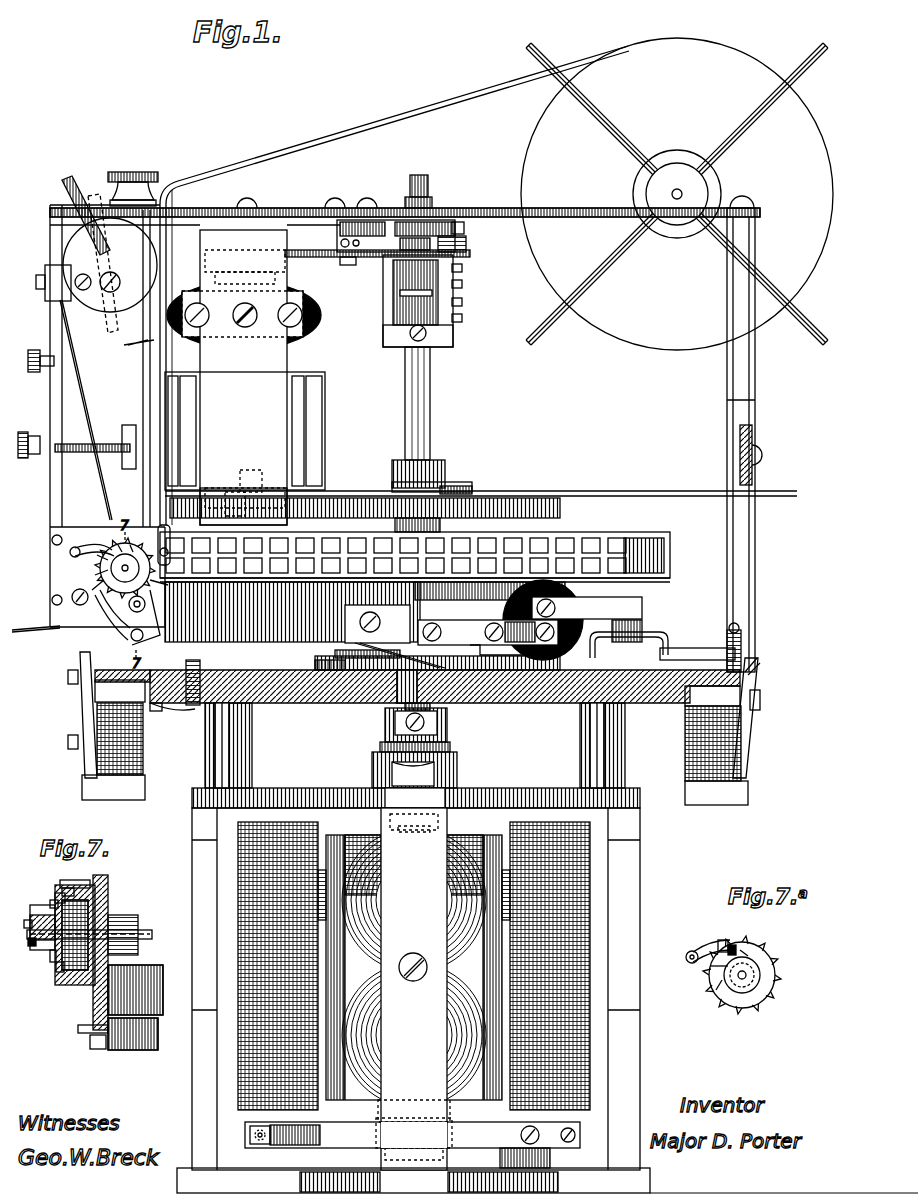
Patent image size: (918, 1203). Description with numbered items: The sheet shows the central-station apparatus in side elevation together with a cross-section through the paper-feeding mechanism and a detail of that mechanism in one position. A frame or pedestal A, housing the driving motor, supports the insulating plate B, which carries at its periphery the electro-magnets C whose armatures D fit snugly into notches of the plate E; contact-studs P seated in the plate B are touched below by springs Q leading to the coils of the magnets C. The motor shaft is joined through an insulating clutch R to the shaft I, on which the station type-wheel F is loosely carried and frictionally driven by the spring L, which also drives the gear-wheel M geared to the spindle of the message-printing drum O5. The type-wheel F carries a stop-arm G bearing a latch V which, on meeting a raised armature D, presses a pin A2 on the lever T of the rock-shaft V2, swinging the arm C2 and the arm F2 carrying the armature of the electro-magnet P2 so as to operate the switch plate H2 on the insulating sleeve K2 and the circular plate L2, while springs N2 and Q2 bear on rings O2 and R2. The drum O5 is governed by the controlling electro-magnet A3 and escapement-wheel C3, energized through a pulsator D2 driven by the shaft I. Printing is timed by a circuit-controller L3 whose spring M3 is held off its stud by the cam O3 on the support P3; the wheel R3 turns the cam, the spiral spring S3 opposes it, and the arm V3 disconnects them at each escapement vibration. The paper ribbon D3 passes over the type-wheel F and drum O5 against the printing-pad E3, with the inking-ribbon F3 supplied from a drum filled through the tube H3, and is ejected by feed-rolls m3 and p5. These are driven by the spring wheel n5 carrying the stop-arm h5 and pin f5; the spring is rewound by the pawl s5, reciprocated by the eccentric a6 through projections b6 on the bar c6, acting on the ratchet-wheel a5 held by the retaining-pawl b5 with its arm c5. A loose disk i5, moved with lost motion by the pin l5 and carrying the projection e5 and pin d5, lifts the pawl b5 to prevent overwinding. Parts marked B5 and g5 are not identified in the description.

In FIG. 1, the paper strip or ribbon D3 is at (128, 375).
In FIG. 1, the ink tube H3 is at (78, 190).
In FIG. 1, the escapement-wheel C3 is at (96, 263).
In FIG. 1, the rotary impelling disk or wheel R3 is at (400, 222).
In FIG. 1, the rotary cam O3 is at (462, 225).
In FIG. 1, the circuit-controller spring M3 is at (396, 236).
In FIG. 1, the spiral spring S3 is at (457, 244).
In FIG. 1, the arm V3 is at (296, 256).
In FIG. 1, the circuit-controller L3 is at (390, 262).
In FIG. 1, the movable support or lever P3 is at (411, 300).
In FIG. 1, the controlling electro-magnet A3 is at (312, 336).
In FIG. 1, the pulsator or pole-changer D2 is at (452, 330).
In FIG. 1, the inking-ribbon F3 is at (98, 435).
In FIG. 1, the printing-pad E3 is at (145, 405).
In FIG. 1, the want or message printing drum O5 is at (320, 435).
In FIG. 1, the shaft I is at (418, 417).
In FIG. 1, the eccentric a6 is at (455, 484).
In FIG. 1, the projections b6 is at (470, 479).
In FIG. 1, the gear-wheel M is at (512, 500).
In FIG. 1, the plate or bar c6 is at (585, 495).
In FIG. 1, the spring L is at (470, 532).
In FIG. 1, the room or station indicating type-wheel F is at (598, 535).
In FIG. 1, the insulating sleeve K2 is at (468, 598).
In FIG. 1, the electro-magnet P2 is at (526, 600).
In FIG. 1, the arm F2 is at (587, 608).
In FIG. 1, the contact-plate H2 is at (488, 632).
In FIG. 1, the spring N2 is at (395, 636).
In FIG. 1, the rock-shaft V2 is at (620, 628).
In FIG. 1, the stop-arm G is at (590, 648).
In FIG. 1, the arm C2 is at (498, 650).
In FIG. 1, the lever T is at (675, 654).
In FIG. 1, the latch or catch V is at (728, 634).
In FIG. 1, the pin A2 is at (755, 662).
In FIG. 1, the circular plate L2 is at (437, 660).
In FIG. 1, the spring Q2 is at (367, 660).
In FIG. 1, the metal ring R2 is at (316, 662).
In FIG. 1, the ring O2 is at (335, 654).
In FIG. 1, the plate or table B is at (522, 703).
In FIG. 1, the contact-points or studs P is at (200, 672).
In FIG. 1, the springs Q is at (176, 709).
In FIG. 1, the plate E is at (712, 696).
In FIG. 1, the armatures D is at (770, 670).
In FIG. 1, the electro-magnets C is at (140, 750).
In FIG. 1, the clutch R is at (458, 762).
In FIG. 1, the plate B5 is at (518, 795).
In FIG. 1, the frame or pedestal A is at (648, 896).
In FIG. 1, the ratchet-wheel a5 is at (125, 591).
In FIG. 7, the ratchet-wheel a5 is at (80, 888).
In FIG. 7A, the ratchet-wheel a5 is at (760, 952).
In FIG. 1, the retaining-pawl b5 is at (90, 548).
In FIG. 7, the retaining-pawl b5 is at (68, 890).
In FIG. 7A, the retaining-pawl b5 is at (703, 950).
In FIG. 1, the arm or projection e5 is at (115, 532).
In FIG. 7, the arm or projection e5 is at (56, 906).
In FIG. 7A, the arm or projection e5 is at (725, 935).
In FIG. 1, the pin d5 is at (137, 532).
In FIG. 7, the pin d5 is at (40, 912).
In FIG. 7A, the pin d5 is at (709, 974).
In FIG. 1, the actuating or winding pawl s5 is at (166, 544).
In FIG. 1, the arm c5 is at (89, 566).
In FIG. 7, the arm c5 is at (58, 896).
In FIG. 7A, the arm c5 is at (736, 944).
In FIG. 1, the pin or projection f5 is at (87, 580).
In FIG. 7, the pin or projection f5 is at (32, 926).
In FIG. 7A, the pin or projection f5 is at (748, 952).
In FIG. 1, the loose disk or plate i5 is at (82, 593).
In FIG. 7, the loose disk or plate i5 is at (58, 972).
In FIG. 7A, the loose disk or plate i5 is at (732, 998).
In FIG. 1, the pin or projection l5 is at (165, 583).
In FIG. 7, the pin or projection l5 is at (52, 958).
In FIG. 7A, the pin or projection l5 is at (745, 998).
In FIG. 1, the screw g5 is at (84, 608).
In FIG. 7, the screw g5 is at (34, 945).
In FIG. 7A, the screw g5 is at (722, 985).
In FIG. 1, the paper-feed roll m3 is at (152, 622).
In FIG. 7, the paper-feed roll m3 is at (128, 968).
In FIG. 1, the feed-roll p5 is at (145, 640).
In FIG. 7, the feed-roll p5 is at (132, 1050).
In FIG. 7, the spring-driven wheel n5 is at (96, 912).
In FIG. 7, the detent or stop arm h5 is at (130, 936).